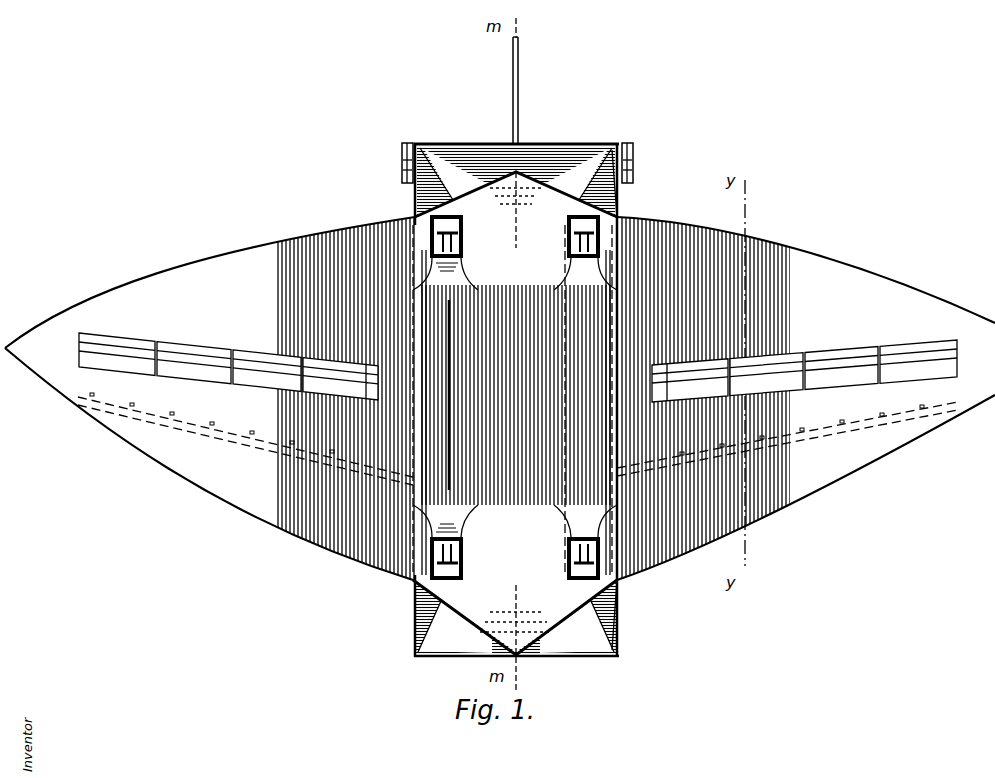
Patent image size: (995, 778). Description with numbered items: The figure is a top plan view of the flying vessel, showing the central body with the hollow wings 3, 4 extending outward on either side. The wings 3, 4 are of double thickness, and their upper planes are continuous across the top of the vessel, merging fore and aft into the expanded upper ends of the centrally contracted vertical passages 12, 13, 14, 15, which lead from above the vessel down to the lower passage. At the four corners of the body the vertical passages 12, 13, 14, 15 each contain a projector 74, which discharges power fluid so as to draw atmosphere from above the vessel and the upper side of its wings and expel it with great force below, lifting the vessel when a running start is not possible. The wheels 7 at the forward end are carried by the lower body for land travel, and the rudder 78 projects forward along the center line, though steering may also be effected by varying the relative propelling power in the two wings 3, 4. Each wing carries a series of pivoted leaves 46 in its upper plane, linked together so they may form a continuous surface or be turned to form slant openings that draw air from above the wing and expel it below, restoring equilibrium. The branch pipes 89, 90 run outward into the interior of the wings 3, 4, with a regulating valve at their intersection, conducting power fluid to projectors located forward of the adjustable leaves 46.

The hollow wing 3 is at (264, 251).
The hollow wing 4 is at (822, 254).
The wheel 7 is at (401, 155).
The vertical passage 12 is at (619, 214).
The vertical passage 13 is at (620, 579).
The vertical passage 14 is at (442, 222).
The vertical passage 15 is at (411, 583).
The pivoted leaves 46 is at (200, 352).
The projector 74 is at (460, 236).
The rudder 78 is at (519, 74).
The branch pipe 89 is at (212, 432).
The branch pipe 90 is at (815, 426).